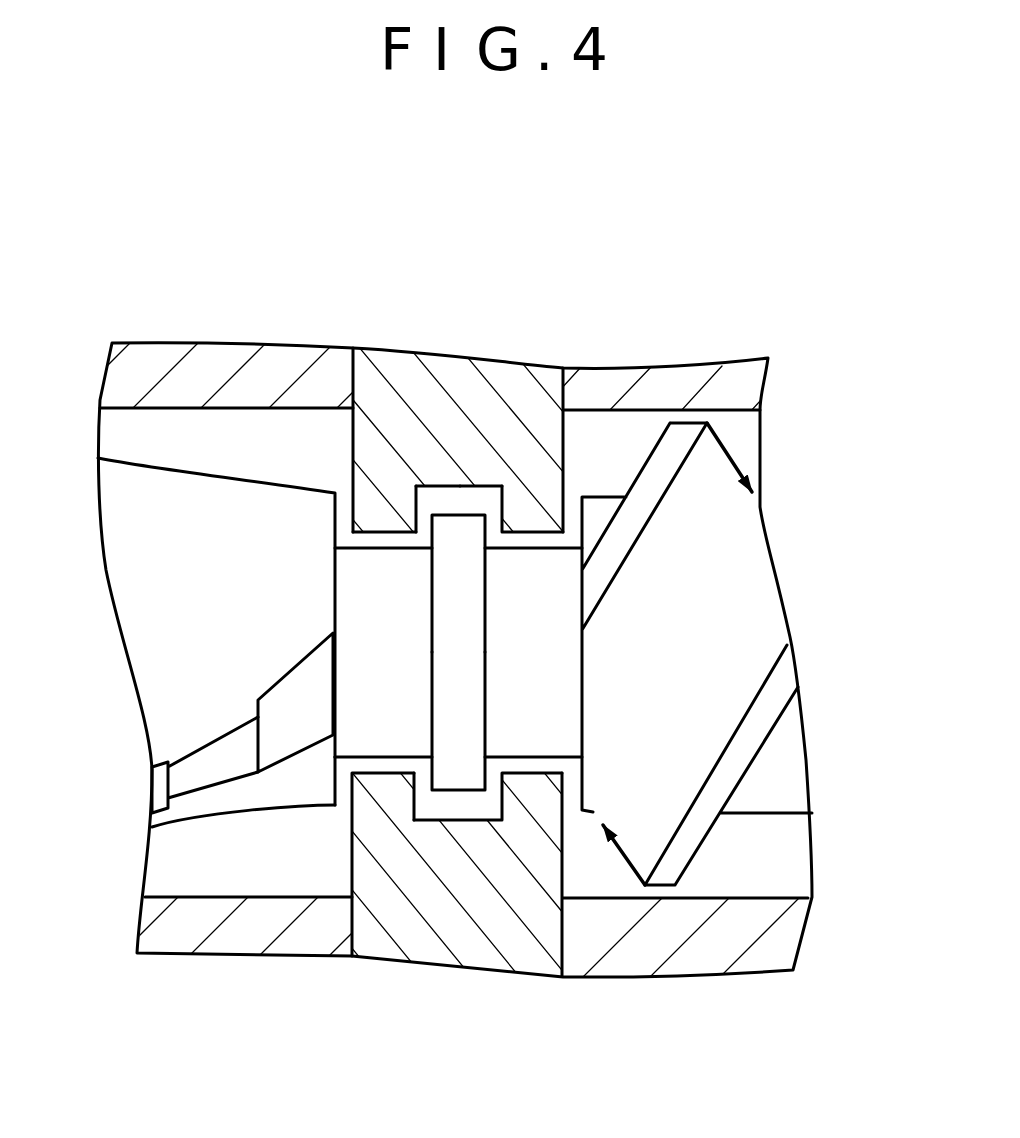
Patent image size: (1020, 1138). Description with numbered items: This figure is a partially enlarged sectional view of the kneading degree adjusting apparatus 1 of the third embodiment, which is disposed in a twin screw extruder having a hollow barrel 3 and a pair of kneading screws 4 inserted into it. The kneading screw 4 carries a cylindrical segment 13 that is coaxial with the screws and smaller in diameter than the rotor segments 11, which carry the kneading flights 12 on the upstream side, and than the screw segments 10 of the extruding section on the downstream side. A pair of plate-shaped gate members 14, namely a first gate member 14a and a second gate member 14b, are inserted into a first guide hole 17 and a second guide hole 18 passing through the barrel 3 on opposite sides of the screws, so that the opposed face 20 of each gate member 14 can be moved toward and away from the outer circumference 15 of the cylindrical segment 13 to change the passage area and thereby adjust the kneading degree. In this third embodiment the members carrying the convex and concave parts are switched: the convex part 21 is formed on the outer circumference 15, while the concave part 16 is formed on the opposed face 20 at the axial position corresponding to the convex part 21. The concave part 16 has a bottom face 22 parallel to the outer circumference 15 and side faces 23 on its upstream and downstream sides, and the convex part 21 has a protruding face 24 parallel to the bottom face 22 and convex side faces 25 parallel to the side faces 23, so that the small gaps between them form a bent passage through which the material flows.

The kneading degree adjusting apparatus 1 is at (572, 260).
The barrel 3 is at (735, 382).
The kneading screw 4 is at (768, 790).
The screw segment 10 is at (713, 623).
The rotor segment 11 is at (175, 686).
The kneading flight 12 is at (155, 795).
The cylindrical segment 13 is at (346, 766).
The gate member 14 is at (461, 614).
The first gate member 14a is at (503, 390).
The second gate member 14b is at (507, 955).
The outer circumference 15 is at (557, 548).
The concave part 16 is at (480, 802).
The first guide hole 17 is at (562, 402).
The second guide hole 18 is at (562, 917).
The opposed face 20 is at (353, 532).
The convex part 21 is at (460, 500).
The bottom face 22 is at (467, 820).
The side face 23 is at (422, 792).
The protruding face 24 is at (445, 510).
The convex side face 25 is at (488, 523).